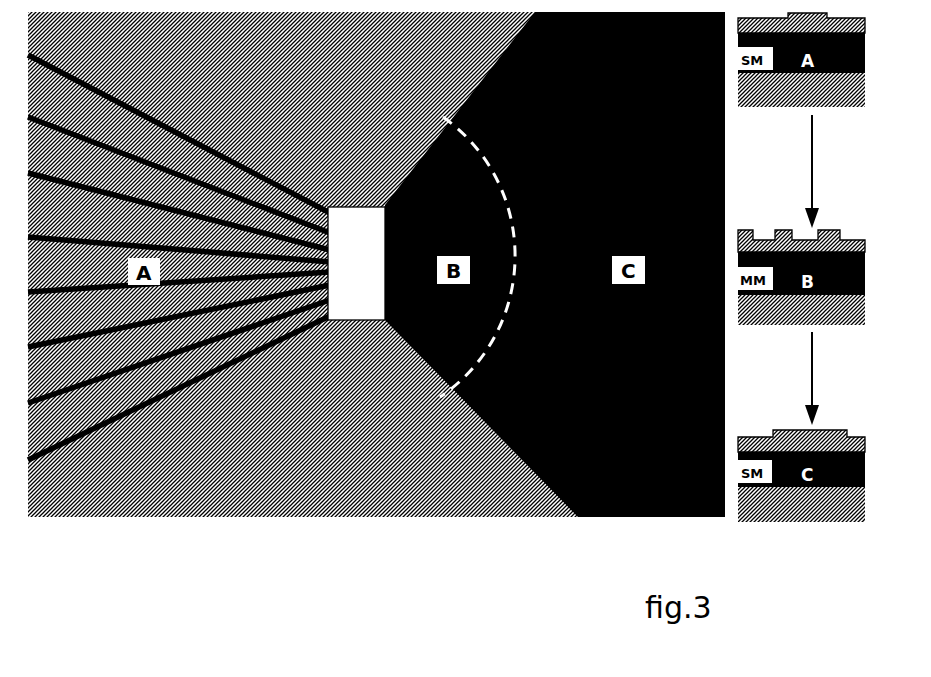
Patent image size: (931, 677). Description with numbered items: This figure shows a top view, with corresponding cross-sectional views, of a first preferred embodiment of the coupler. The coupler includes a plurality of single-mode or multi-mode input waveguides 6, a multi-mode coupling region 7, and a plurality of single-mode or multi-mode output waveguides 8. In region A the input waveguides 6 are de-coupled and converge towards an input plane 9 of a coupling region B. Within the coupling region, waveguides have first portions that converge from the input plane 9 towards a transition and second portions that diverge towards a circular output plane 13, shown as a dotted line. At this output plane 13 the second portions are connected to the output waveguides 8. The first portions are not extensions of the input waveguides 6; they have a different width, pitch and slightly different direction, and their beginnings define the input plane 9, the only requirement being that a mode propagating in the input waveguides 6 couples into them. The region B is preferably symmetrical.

The input waveguides 6 is at (88, 437).
The multi-mode coupling region 7 is at (357, 322).
The output waveguides 8 is at (493, 475).
The input plane 9 is at (327, 163).
The circular output plane 13 is at (440, 397).